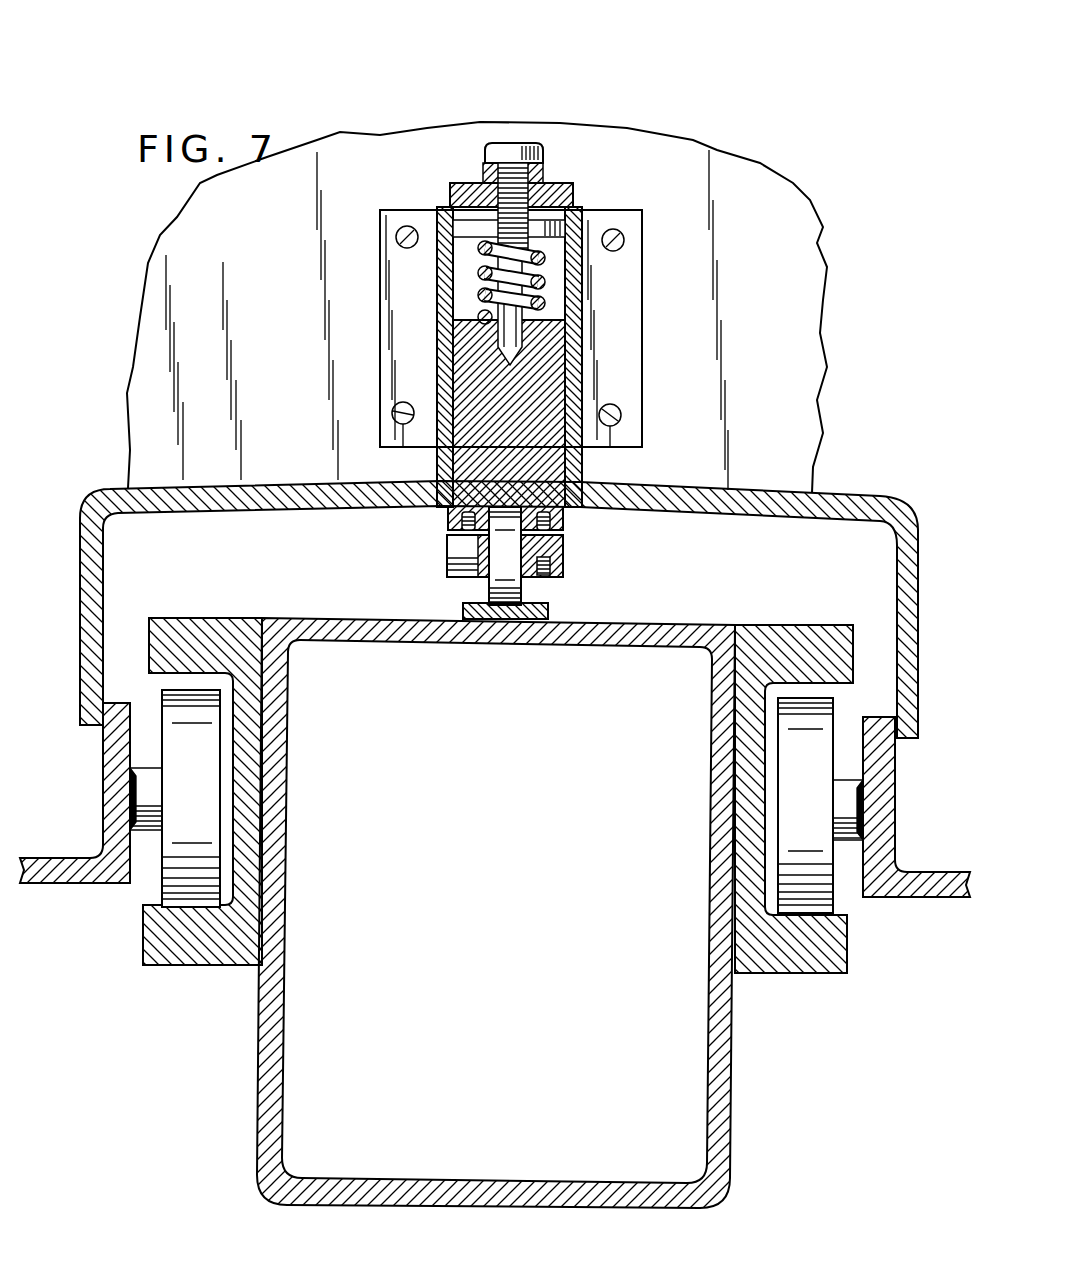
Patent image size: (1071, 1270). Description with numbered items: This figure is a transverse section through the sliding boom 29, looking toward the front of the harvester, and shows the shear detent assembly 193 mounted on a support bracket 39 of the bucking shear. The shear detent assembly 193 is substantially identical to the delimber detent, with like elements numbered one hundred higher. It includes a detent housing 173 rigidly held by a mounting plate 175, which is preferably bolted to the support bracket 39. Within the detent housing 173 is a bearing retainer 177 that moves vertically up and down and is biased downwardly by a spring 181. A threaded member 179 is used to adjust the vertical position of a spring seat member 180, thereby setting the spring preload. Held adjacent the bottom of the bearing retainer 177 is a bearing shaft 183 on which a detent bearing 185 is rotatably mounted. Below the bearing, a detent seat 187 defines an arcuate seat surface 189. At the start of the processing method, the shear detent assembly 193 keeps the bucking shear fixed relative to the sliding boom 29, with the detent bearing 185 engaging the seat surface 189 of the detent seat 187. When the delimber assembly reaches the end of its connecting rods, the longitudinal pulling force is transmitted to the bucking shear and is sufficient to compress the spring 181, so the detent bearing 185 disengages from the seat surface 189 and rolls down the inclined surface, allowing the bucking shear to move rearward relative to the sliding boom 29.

The sliding boom 29 is at (234, 981).
The support bracket 39 is at (477, 307).
The detent housing 173 is at (446, 312).
The mounting plate 175 is at (642, 368).
The bearing retainer 177 is at (470, 378).
The threaded member 179 is at (503, 142).
The spring seat member 180 is at (475, 227).
The spring 181 is at (547, 257).
The bearing shaft 183 is at (593, 547).
The detent bearing 185 is at (490, 580).
The detent seat 187 is at (463, 607).
The seat surface 189 is at (538, 604).
The shear detent assembly 193 is at (591, 195).